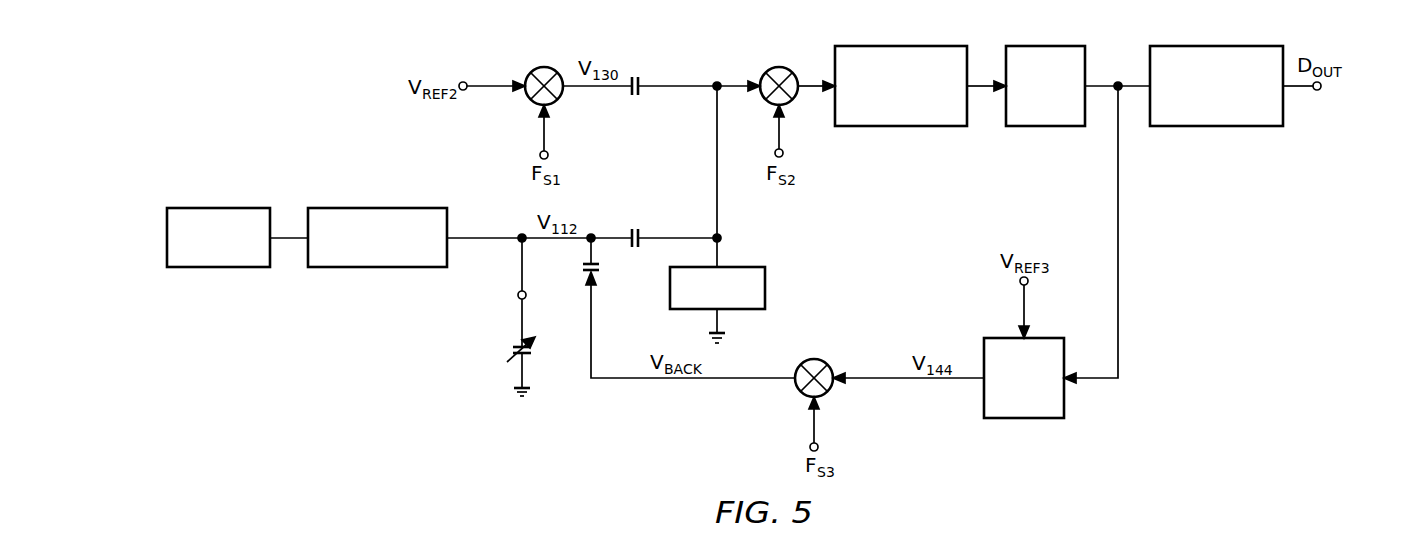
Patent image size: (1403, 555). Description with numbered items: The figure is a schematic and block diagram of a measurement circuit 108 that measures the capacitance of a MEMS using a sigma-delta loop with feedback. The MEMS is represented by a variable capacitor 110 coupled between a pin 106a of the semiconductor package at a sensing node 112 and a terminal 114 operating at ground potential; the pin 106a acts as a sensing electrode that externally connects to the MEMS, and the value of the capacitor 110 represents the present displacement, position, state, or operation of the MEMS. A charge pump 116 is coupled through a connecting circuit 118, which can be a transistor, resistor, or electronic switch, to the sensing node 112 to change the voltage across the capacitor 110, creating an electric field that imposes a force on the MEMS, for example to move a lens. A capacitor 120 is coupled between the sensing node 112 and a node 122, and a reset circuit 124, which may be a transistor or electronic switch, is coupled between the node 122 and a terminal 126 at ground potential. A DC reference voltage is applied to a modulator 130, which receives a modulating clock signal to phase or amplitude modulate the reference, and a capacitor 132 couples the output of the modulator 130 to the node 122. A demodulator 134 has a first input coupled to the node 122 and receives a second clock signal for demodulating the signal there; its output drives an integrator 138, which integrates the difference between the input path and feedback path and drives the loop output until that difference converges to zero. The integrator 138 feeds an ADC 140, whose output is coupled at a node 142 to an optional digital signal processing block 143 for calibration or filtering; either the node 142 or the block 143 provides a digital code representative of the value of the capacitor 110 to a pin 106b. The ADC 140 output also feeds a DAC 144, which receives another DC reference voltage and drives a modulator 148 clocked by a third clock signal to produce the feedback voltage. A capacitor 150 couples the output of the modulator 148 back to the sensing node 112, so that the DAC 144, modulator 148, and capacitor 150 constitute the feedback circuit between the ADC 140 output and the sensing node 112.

The measurement circuit 108 is at (346, 40).
The charge pump 116 is at (217, 208).
The connecting circuit 118 is at (372, 208).
The sensing node 112 is at (521, 236).
The pin 106a is at (518, 296).
The variable capacitor 110 is at (511, 352).
The terminal 114 is at (517, 397).
The capacitor 120 is at (637, 228).
The node 122 is at (719, 237).
The reset circuit 124 is at (766, 286).
The terminal 126 is at (721, 345).
The capacitor 150 is at (599, 265).
The modulator 130 is at (531, 70).
The capacitor 132 is at (637, 78).
The demodulator 134 is at (766, 70).
The integrator 138 is at (901, 46).
The ADC 140 is at (1045, 46).
The node 142 is at (1117, 82).
The digital signal processing block 143 is at (1217, 46).
The pin 106b is at (1318, 90).
The digital-to-analog converter 144 is at (1024, 418).
The modulator 148 is at (827, 365).